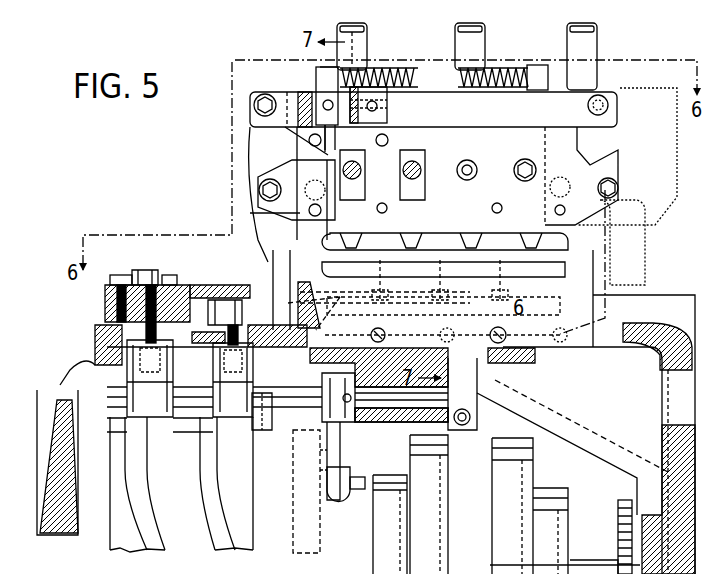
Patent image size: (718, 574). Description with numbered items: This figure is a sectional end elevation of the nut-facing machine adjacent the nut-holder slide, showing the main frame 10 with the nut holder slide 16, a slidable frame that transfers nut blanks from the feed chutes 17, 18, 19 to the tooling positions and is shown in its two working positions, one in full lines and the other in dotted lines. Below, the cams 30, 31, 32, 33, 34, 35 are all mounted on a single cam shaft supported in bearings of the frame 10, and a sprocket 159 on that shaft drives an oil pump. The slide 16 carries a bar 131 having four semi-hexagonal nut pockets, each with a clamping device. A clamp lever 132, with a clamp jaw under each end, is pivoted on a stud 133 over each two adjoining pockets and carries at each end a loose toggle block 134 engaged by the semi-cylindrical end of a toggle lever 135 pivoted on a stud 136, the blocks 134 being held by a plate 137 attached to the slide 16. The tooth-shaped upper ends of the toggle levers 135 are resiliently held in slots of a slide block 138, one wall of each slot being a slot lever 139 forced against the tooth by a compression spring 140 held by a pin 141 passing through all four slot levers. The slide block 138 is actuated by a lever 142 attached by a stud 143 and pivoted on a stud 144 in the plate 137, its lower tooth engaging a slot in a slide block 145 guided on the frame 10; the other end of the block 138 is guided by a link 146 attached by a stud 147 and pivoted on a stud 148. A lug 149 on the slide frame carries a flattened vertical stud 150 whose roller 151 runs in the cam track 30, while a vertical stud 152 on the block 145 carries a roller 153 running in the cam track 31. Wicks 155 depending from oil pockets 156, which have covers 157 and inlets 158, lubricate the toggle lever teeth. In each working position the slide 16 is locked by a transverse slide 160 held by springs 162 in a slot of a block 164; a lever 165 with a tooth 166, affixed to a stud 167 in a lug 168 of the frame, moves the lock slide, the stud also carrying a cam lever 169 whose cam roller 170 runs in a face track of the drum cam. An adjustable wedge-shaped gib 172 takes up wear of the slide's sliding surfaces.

The main frame 10 is at (58, 420).
The nut holder slide 16 is at (240, 298).
The feed chute 17 is at (367, 42).
The feed chute 18 is at (485, 38).
The feed chute 19 is at (597, 38).
The cam track 30 is at (162, 550).
The cam track 31 is at (232, 550).
The cam 32 is at (373, 532).
The cam 33 is at (448, 492).
The cam 34 is at (533, 456).
The cam 35 is at (568, 526).
The bar 131 is at (605, 260).
The clamp lever 132 is at (250, 213).
The stud 133 is at (441, 196).
The toggle block 134 is at (408, 167).
The toggle lever 135 is at (250, 150).
The stud 136 is at (262, 167).
The plate 137 is at (310, 225).
The slide block 138 is at (250, 80).
The slot lever 139 is at (300, 97).
The compression spring 140 is at (408, 68).
The pin 141 is at (318, 82).
The lever 142 is at (247, 123).
The stud 143 is at (254, 103).
The stud 144 is at (305, 190).
The slide block 145 is at (262, 330).
The link 146 is at (620, 125).
The stud 147 is at (606, 100).
The stud 148 is at (618, 188).
The lug 149 is at (105, 298).
The vertical stud 150 is at (127, 352).
The roller 151 is at (150, 417).
The vertical stud 152 is at (268, 400).
The roller 153 is at (232, 417).
The wick 155 is at (330, 90).
The oil pocket 156 is at (388, 67).
The cover 157 is at (415, 87).
The inlet 158 is at (402, 66).
The sprocket 159 is at (620, 510).
The transverse slide 160 is at (408, 330).
The spring 162 is at (477, 393).
The block 164 is at (515, 332).
The lever 165 is at (464, 428).
The tooth 166 is at (440, 280).
The stud 167 is at (471, 418).
The lug 168 is at (378, 424).
The cam lever 169 is at (340, 446).
The cam roller 170 is at (305, 498).
The gib 172 is at (222, 282).